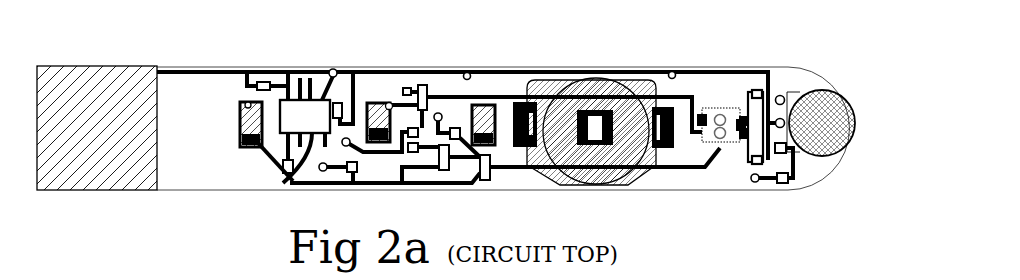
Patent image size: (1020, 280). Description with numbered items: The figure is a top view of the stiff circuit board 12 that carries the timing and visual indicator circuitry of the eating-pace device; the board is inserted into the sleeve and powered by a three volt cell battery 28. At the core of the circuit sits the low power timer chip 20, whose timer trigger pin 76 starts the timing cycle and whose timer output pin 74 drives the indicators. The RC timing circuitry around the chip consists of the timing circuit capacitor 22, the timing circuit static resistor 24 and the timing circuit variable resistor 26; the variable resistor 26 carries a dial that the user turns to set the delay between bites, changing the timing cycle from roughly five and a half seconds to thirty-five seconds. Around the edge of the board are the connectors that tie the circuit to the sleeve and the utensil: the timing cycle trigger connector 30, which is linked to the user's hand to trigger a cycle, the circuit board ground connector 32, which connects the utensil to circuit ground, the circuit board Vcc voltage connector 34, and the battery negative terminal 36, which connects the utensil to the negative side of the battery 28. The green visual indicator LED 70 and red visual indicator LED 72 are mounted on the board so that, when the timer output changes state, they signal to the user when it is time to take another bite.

The circuit board 12 is at (390, 67).
The 555 timer chip 20 is at (298, 100).
The timing circuit capacitor 22 is at (352, 172).
The timing circuit static resistor 24 is at (784, 183).
The timing circuit variable resistor 26 is at (813, 133).
The circuit battery 28 is at (590, 97).
The timing cycle trigger connector 30 is at (107, 118).
The circuit board ground connector 32 is at (248, 122).
The circuit board Vcc voltage connector 34 is at (649, 88).
The battery negative terminal 36 is at (488, 125).
The green visual indicator LED 70 is at (723, 139).
The red visual indicator LED 72 is at (722, 114).
The 555 timer output pin 74 is at (293, 181).
The 555 timer trigger pin 76 is at (308, 110).